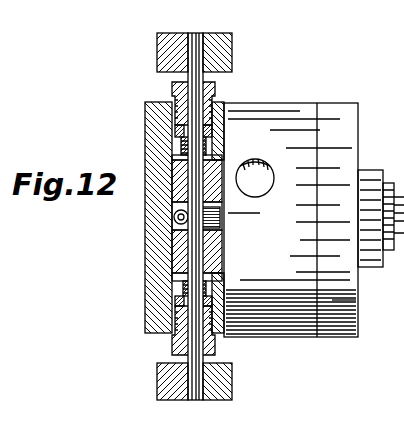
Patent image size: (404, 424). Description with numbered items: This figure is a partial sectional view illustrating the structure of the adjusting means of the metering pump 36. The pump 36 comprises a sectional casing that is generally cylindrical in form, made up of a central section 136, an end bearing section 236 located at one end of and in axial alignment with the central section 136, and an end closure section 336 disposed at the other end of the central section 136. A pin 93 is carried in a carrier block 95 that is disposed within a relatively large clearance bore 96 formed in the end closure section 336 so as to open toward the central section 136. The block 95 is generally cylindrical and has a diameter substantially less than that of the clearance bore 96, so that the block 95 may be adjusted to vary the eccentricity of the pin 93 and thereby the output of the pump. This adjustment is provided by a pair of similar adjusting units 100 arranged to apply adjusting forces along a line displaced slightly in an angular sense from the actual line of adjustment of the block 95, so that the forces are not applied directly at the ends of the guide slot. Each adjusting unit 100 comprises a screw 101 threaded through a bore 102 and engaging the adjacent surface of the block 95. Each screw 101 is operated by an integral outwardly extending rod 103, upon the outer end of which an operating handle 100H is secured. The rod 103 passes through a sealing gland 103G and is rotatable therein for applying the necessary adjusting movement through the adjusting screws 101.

The pump 36 is at (291, 103).
The pin 93 is at (222, 216).
The carrier block 95 is at (198, 247).
The clearance bore 96 is at (215, 277).
The adjusting unit 100 is at (150, 42).
The operating handle 100H is at (232, 51).
The screw 101 is at (208, 156).
The bore 102 is at (212, 292).
The rod 103 is at (190, 358).
The sealing gland 103G is at (216, 101).
The central section 136 is at (257, 325).
The end bearing section 236 is at (332, 325).
The end closure section 336 is at (145, 118).